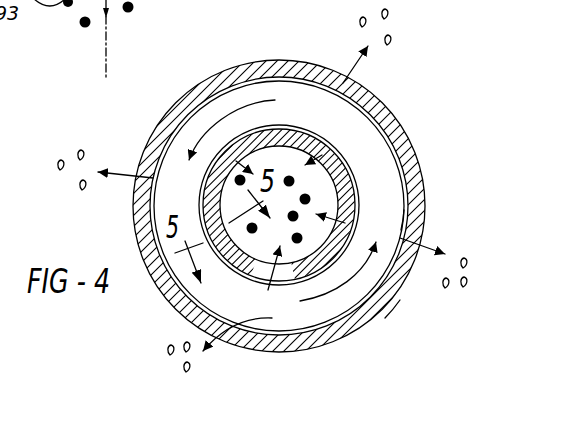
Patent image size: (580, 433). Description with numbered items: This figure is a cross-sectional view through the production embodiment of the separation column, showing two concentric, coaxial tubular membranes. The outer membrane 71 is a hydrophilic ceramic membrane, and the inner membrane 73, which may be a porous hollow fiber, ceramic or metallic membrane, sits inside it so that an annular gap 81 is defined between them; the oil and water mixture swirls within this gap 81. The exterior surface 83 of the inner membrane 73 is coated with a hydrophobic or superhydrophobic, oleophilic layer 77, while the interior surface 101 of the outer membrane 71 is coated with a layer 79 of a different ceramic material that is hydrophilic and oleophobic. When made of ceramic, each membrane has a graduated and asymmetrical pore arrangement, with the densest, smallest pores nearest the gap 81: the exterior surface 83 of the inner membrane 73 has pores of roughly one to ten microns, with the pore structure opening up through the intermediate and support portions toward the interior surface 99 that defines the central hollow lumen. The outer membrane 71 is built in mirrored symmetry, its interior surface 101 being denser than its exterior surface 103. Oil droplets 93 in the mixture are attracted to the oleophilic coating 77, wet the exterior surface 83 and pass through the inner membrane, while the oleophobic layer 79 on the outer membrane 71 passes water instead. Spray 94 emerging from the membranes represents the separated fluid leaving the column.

The outer membrane 71 is at (378, 104).
The inner membrane 73 is at (257, 140).
The hydrophobic layer 77 is at (200, 183).
The layer of different ceramic material 79 is at (388, 151).
The gap 81 is at (303, 105).
The exterior surface 83 is at (353, 175).
The oil droplets 93 is at (252, 233).
The spray droplets 94 is at (168, 350).
The interior surface 99 is at (295, 255).
The interior surface 101 is at (402, 204).
The exterior surface 103 is at (396, 292).